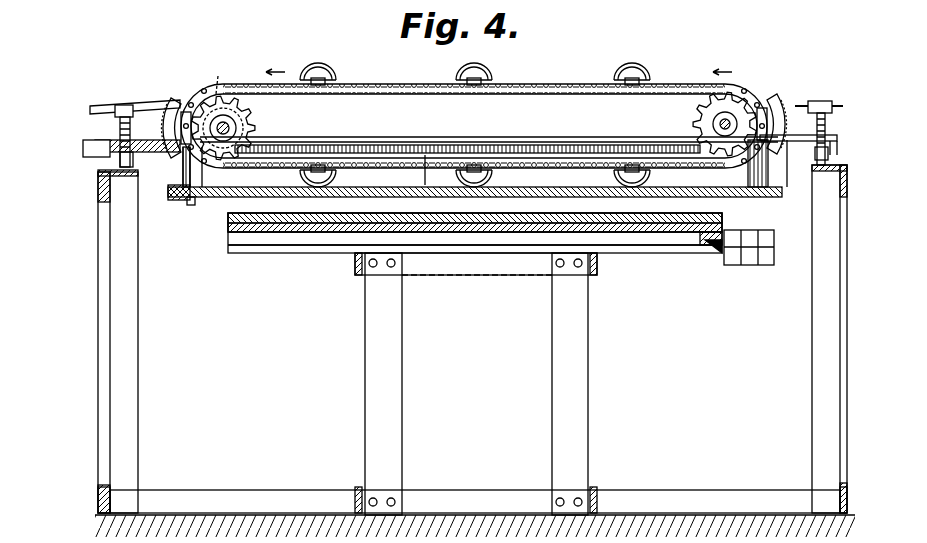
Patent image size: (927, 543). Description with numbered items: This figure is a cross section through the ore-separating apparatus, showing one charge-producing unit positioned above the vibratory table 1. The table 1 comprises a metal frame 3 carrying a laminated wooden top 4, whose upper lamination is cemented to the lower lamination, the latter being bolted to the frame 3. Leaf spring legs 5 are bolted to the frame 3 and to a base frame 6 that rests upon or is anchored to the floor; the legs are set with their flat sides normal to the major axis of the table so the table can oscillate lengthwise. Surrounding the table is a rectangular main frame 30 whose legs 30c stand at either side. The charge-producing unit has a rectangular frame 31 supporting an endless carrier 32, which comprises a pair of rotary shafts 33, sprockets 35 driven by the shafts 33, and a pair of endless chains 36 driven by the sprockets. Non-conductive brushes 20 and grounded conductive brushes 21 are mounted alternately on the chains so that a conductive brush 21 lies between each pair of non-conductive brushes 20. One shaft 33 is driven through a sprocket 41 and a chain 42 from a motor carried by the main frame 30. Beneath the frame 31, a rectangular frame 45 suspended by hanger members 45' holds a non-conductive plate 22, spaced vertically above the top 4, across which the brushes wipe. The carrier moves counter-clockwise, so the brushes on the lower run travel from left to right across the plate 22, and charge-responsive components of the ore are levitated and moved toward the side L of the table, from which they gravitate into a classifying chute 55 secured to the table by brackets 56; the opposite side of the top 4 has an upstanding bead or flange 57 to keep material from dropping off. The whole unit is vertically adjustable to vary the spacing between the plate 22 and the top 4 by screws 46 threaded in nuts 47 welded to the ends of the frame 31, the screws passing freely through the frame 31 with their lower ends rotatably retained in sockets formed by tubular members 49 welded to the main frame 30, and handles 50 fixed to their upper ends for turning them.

The table 1 is at (223, 236).
The metal frame 3 is at (302, 254).
The laminated wooden top 4 is at (410, 222).
The leaf spring legs 5 is at (402, 390).
The base frame 6 is at (448, 486).
The non-conductive brushes 20 is at (324, 66).
The conductive brushes 21 is at (480, 67).
The plates 22 is at (429, 176).
The main frame 30 is at (118, 178).
The legs 30c is at (138, 366).
The rectangular frame 31 is at (568, 137).
The endless carrier 32 is at (578, 84).
The rotary shafts 33 is at (232, 129).
The sprockets 35 is at (256, 113).
The endless chains 36 is at (416, 84).
The sprocket 41 is at (218, 76).
The chain 42 is at (186, 112).
The rectangular frame 45 is at (462, 208).
The hanger members 45' is at (192, 214).
The screws 46 is at (118, 126).
The nuts 47 is at (136, 140).
The tubular members 49 is at (134, 165).
The handles 50 is at (118, 105).
The classifying chute 55 is at (730, 262).
The brackets 56 is at (712, 245).
The upstanding bead or flange 57 is at (236, 214).
The side L of the table L is at (731, 220).